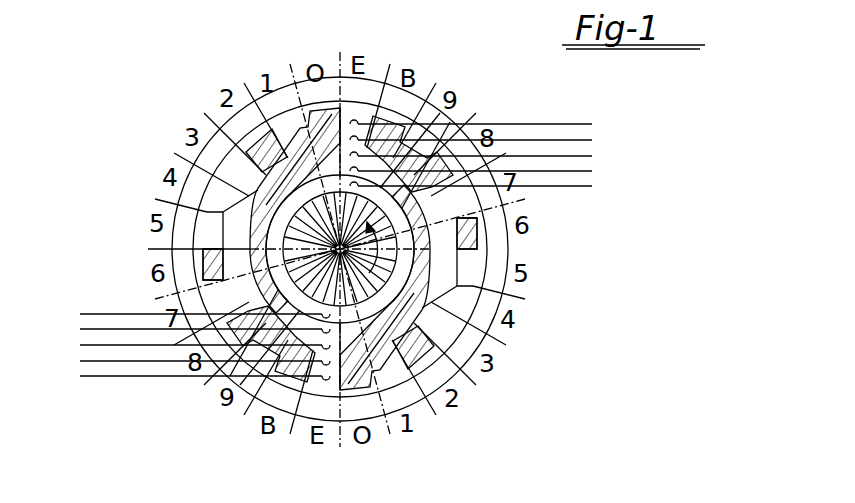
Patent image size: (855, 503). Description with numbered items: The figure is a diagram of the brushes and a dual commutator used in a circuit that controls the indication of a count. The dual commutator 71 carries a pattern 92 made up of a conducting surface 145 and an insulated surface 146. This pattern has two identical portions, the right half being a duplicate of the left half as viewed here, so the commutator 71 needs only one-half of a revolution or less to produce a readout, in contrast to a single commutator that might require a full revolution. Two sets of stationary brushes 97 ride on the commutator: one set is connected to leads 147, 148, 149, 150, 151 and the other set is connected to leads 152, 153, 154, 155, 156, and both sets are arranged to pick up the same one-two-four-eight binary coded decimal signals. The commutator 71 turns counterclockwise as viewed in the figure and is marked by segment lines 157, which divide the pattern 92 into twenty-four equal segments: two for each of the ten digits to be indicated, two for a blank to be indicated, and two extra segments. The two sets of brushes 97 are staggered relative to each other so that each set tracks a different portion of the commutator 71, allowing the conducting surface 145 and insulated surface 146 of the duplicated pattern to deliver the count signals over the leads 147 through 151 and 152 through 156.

The dual commutator 71 is at (252, 80).
The pattern 92 is at (492, 327).
The stationary brushes 97 is at (347, 130).
The conducting surface 145 is at (470, 272).
The insulated surface 146 is at (430, 249).
The lead 147 is at (80, 314).
The lead 148 is at (80, 329).
The lead 149 is at (80, 345).
The lead 150 is at (80, 361).
The lead 151 is at (80, 376).
The lead 152 is at (592, 186).
The lead 153 is at (592, 171).
The lead 154 is at (592, 156).
The lead 155 is at (592, 140).
The lead 156 is at (592, 124).
The segment lines 157 is at (384, 72).